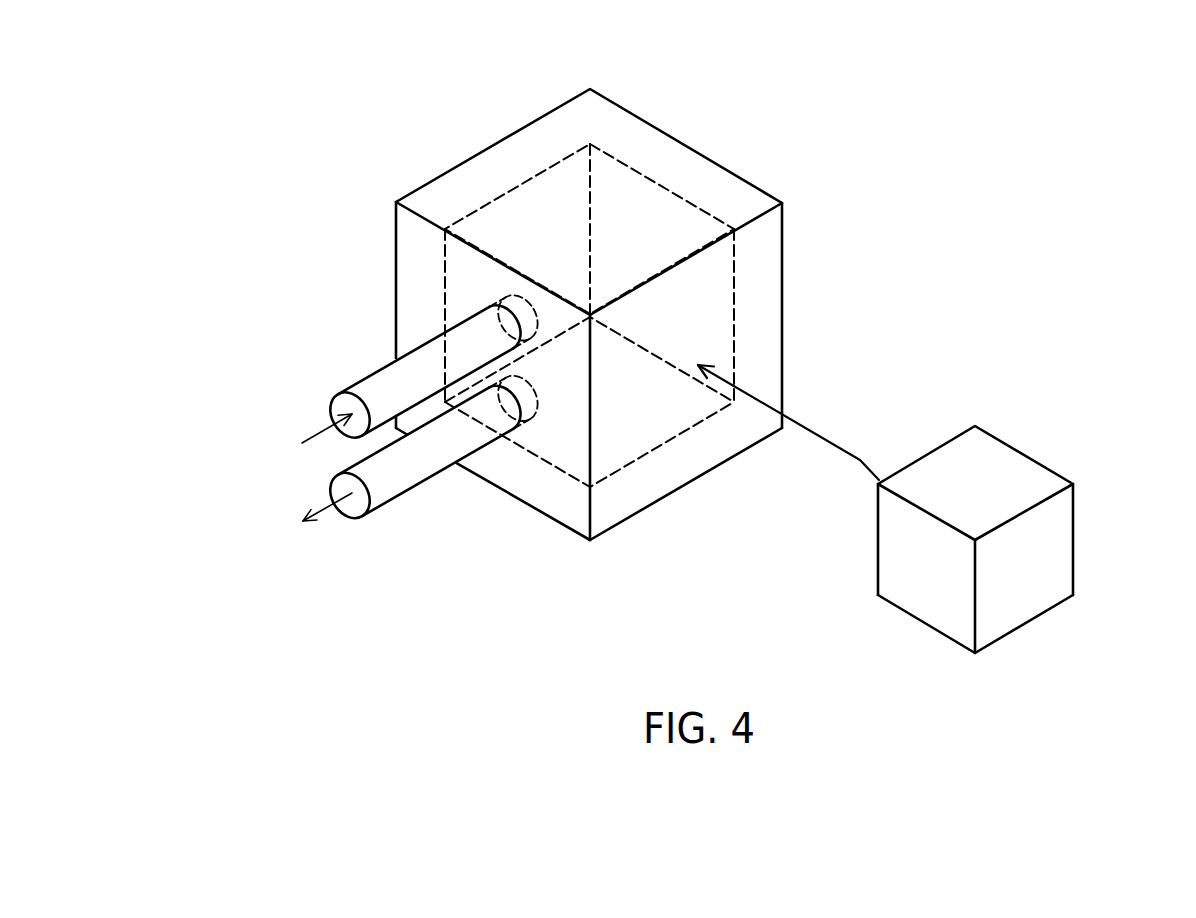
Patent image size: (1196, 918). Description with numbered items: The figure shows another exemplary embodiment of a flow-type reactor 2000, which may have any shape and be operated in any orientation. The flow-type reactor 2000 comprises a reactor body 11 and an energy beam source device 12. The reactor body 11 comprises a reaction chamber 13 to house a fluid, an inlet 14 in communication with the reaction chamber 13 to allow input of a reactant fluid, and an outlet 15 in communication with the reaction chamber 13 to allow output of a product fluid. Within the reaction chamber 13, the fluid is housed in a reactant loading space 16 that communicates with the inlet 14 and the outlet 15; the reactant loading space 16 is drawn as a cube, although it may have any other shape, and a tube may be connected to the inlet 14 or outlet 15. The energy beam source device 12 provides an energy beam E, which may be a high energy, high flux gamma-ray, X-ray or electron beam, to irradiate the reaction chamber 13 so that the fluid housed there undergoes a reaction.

The flow-type reactor 2000 is at (1150, 102).
The reactor body 11 is at (215, 303).
The energy beam source device 12 is at (1073, 538).
The reaction chamber 13 is at (396, 300).
The inlet 14 is at (332, 490).
The outlet 15 is at (332, 410).
The reactant loading space 16 is at (668, 190).
The energy beam E is at (848, 452).